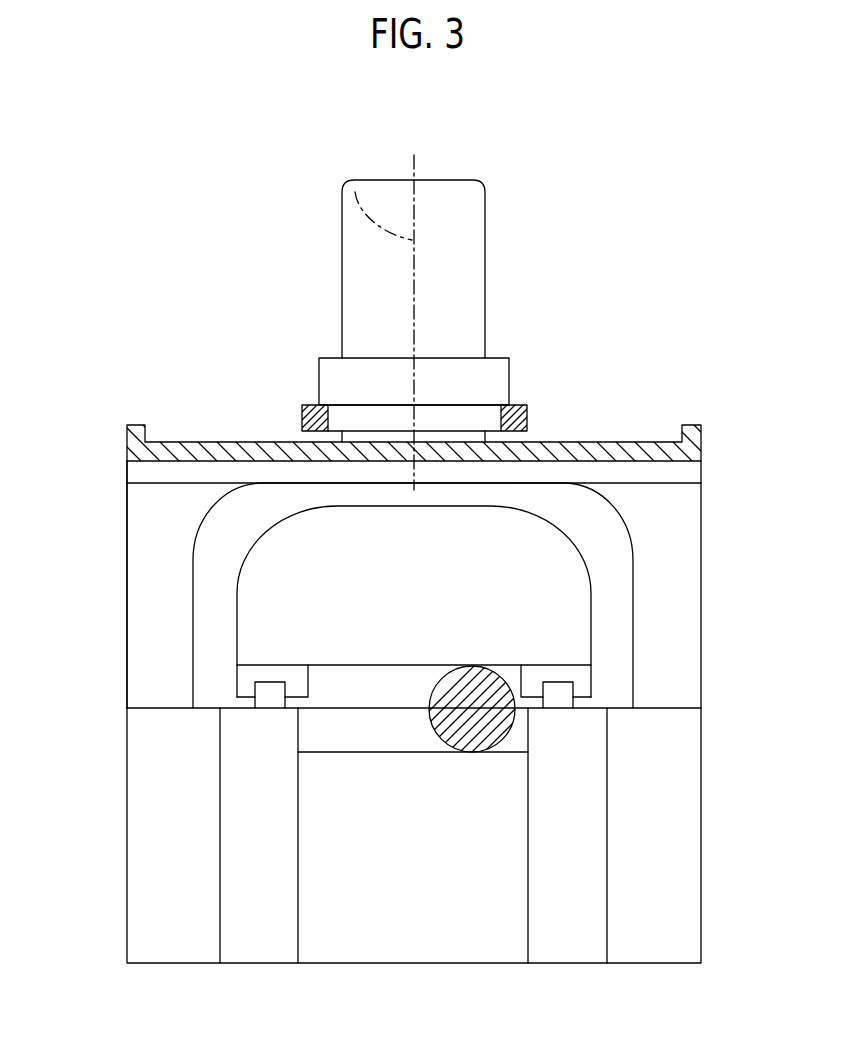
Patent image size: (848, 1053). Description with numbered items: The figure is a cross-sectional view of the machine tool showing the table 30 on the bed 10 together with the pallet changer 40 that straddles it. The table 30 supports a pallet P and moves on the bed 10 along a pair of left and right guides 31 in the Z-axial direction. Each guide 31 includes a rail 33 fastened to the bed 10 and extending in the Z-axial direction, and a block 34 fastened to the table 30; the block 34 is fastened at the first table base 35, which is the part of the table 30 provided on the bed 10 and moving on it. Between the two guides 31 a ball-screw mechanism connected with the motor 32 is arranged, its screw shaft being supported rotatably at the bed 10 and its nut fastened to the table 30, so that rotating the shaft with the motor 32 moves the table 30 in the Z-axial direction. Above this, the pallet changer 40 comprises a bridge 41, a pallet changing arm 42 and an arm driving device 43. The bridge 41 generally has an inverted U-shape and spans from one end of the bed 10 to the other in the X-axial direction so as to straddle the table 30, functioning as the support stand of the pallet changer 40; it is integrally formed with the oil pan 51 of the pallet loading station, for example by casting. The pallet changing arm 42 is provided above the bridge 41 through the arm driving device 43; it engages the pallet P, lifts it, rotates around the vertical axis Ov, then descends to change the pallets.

The bed 10 is at (642, 828).
The table 30 is at (587, 541).
The guide 31 is at (421, 687).
The motor 32 is at (462, 729).
The rail 33 is at (248, 727).
The block 34 is at (252, 682).
The first table base 35 is at (540, 575).
The pallet changer 40 is at (471, 291).
The bridge 41 is at (152, 535).
The pallet changing arm 42 is at (530, 405).
The arm driving device 43 is at (450, 272).
The oil pan 51 is at (613, 441).
The pallet P is at (340, 378).
The vertical axis Ov is at (358, 192).